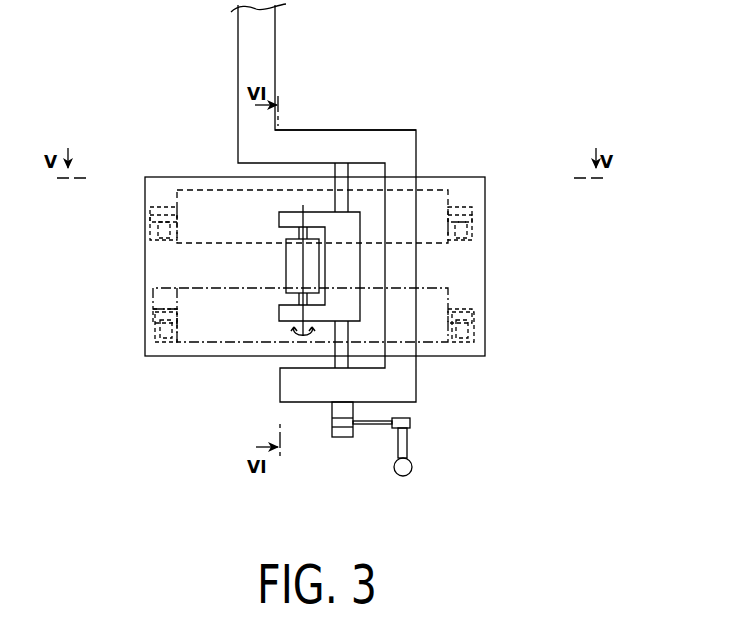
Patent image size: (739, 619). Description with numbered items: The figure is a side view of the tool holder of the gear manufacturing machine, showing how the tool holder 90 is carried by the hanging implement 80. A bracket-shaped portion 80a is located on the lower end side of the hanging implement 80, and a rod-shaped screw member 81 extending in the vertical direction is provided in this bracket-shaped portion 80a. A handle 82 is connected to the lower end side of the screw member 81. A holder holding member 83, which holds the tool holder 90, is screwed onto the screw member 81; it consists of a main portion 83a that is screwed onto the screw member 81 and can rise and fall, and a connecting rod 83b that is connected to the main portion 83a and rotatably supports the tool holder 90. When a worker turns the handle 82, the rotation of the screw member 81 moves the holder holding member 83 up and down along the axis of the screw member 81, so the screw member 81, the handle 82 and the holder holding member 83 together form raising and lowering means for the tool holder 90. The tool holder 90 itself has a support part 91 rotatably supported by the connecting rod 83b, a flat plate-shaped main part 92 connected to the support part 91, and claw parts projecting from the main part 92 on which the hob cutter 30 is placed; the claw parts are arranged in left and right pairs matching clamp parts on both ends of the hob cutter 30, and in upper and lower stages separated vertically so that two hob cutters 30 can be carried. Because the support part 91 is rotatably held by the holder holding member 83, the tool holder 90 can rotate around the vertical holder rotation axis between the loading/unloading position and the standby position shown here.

The hanging implement 80 is at (343, 203).
The bracket-shaped portion 80a is at (405, 130).
The screw member 81 is at (342, 324).
The handle 82 is at (378, 466).
The holder holding member 83 is at (250, 312).
The main portion 83a is at (290, 322).
The connecting rod 83b is at (283, 304).
The tool holder 90 is at (163, 376).
The support part 91 is at (286, 264).
The main part 92 is at (165, 357).
The hob cutter 30 is at (193, 190).